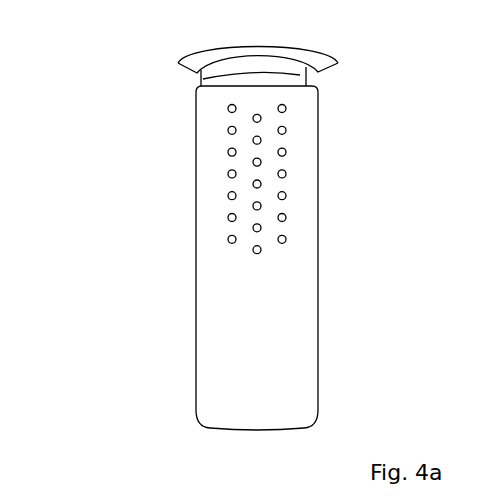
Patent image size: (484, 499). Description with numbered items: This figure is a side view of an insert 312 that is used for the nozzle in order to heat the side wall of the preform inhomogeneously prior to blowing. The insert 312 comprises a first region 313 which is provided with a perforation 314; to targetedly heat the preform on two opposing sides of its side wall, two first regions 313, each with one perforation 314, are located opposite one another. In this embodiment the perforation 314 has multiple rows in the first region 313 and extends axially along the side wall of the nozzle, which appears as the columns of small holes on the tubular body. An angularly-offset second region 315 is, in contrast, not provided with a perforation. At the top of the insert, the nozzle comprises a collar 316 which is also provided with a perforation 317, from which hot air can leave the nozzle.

The insert 312 is at (152, 363).
The first region 313 is at (272, 165).
The perforation 314 is at (282, 217).
The second region 315 is at (196, 190).
The collar 316 is at (200, 57).
The perforation 317 is at (200, 78).